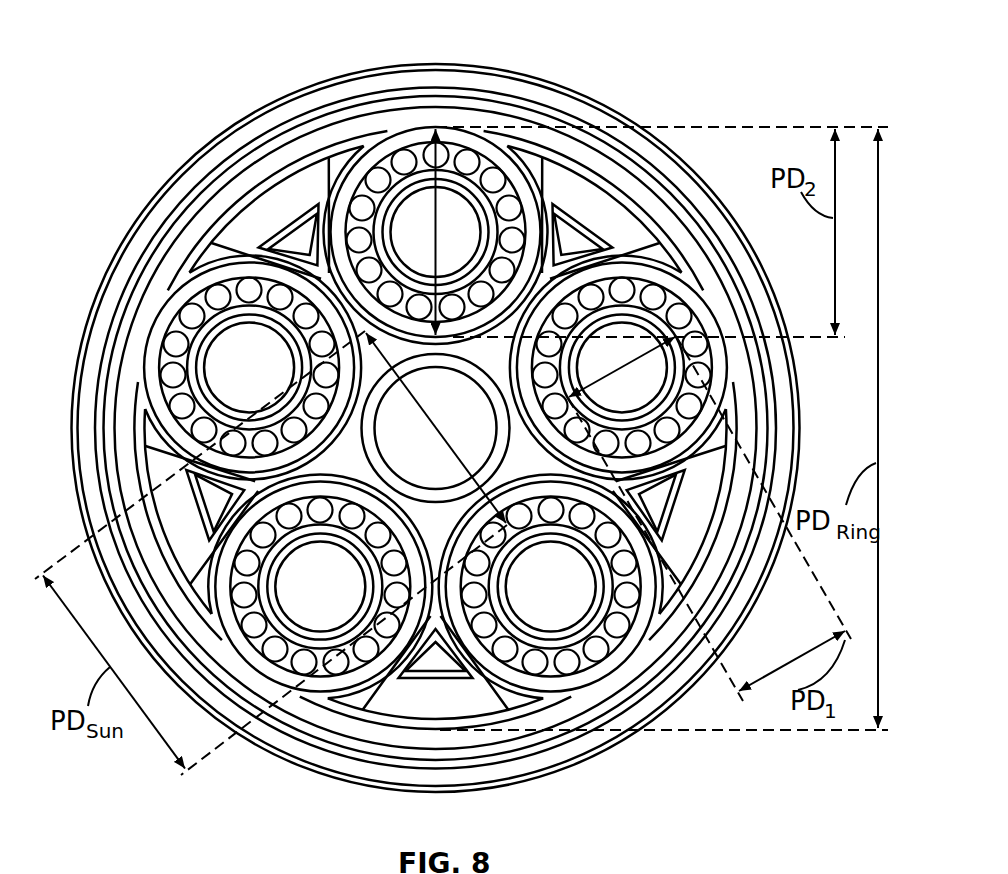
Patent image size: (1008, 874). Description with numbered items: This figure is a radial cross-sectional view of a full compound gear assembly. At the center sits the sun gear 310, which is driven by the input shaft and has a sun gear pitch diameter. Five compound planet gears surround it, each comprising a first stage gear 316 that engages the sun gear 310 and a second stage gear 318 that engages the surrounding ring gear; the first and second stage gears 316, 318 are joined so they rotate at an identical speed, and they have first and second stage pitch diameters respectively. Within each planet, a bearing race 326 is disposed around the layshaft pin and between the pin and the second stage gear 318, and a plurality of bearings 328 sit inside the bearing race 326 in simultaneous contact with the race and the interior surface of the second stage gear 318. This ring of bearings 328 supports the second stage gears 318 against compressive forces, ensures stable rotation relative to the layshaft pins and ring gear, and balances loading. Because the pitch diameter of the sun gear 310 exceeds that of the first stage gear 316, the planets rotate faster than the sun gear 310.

The sun gear 310 is at (435, 550).
The first stage gear 316 is at (515, 178).
The second stage gear 318 is at (378, 155).
The bearing race 326 is at (500, 182).
The bearings 328 is at (466, 157).